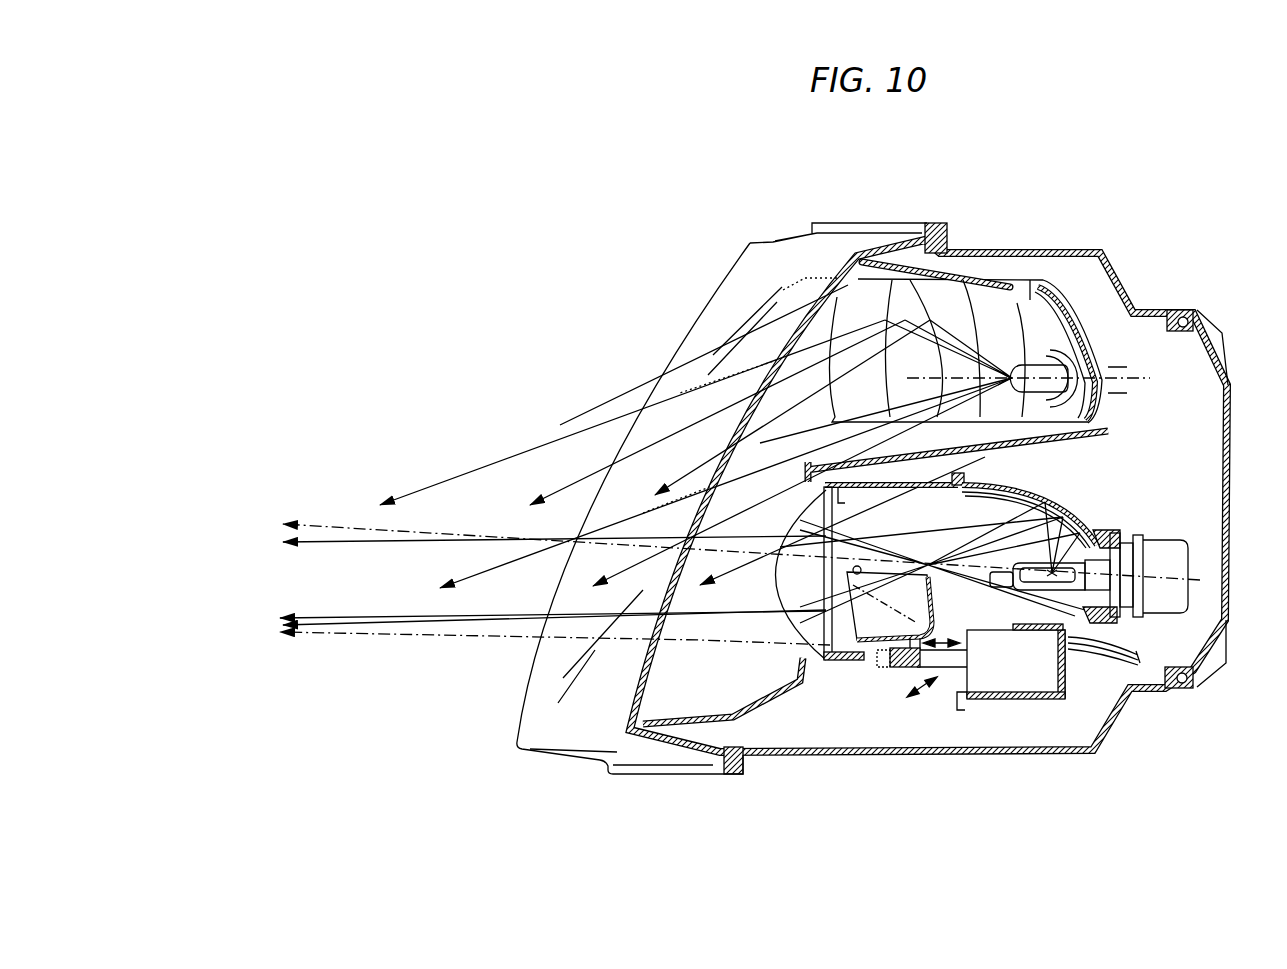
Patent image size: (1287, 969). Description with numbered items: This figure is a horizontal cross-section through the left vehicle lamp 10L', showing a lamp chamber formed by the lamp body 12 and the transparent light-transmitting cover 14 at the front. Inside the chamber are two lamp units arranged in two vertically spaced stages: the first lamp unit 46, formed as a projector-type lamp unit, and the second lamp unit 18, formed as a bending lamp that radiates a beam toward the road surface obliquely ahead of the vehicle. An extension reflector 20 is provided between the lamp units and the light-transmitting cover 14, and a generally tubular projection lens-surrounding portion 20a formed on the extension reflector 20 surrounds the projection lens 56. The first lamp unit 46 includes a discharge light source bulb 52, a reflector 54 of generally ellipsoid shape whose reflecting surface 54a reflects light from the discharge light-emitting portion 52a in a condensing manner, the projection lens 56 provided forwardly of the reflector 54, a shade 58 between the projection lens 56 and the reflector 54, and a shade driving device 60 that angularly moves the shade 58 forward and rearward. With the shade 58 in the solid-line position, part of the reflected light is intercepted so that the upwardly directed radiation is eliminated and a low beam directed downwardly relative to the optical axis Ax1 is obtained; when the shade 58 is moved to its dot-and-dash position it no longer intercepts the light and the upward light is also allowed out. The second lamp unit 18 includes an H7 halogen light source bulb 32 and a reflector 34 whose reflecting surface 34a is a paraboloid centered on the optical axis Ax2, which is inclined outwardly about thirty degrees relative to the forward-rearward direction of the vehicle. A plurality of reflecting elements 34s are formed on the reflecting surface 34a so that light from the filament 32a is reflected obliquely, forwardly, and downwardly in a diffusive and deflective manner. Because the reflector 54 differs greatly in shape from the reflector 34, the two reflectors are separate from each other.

The left vehicle lamp 10L' is at (1158, 430).
The lamp body 12 is at (1117, 267).
The light-transmitting cover 14 is at (712, 288).
The second lamp unit 18 is at (1147, 353).
The extension reflector 20 is at (727, 715).
The projection lens-surrounding portion 20a is at (862, 460).
The light source bulb 32 is at (1042, 360).
The filament 32a is at (998, 497).
The reflector 34 is at (1088, 308).
The reflecting surface 34a is at (993, 310).
The reflecting elements 34s is at (930, 320).
The first lamp unit 46 is at (1157, 525).
The light source bulb 52 is at (1068, 557).
The discharge light-emitting portion 52a is at (1015, 560).
The reflector 54 is at (1040, 488).
The reflecting surface 54a is at (1030, 486).
The projection lens 56 is at (783, 520).
The shade 58 is at (938, 598).
The shade driving device 60 is at (957, 685).
The optical axis Ax1 is at (748, 598).
The optical axis Ax2 is at (910, 381).